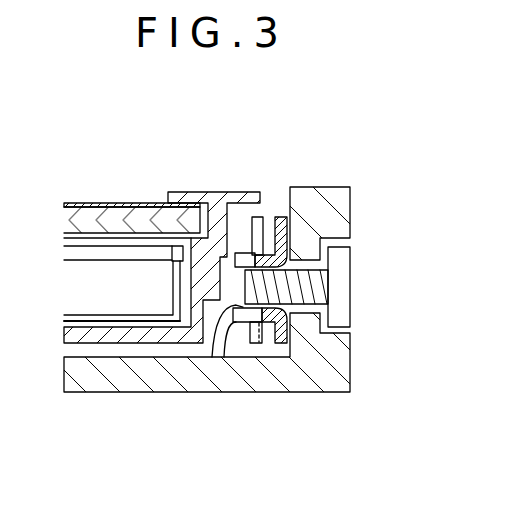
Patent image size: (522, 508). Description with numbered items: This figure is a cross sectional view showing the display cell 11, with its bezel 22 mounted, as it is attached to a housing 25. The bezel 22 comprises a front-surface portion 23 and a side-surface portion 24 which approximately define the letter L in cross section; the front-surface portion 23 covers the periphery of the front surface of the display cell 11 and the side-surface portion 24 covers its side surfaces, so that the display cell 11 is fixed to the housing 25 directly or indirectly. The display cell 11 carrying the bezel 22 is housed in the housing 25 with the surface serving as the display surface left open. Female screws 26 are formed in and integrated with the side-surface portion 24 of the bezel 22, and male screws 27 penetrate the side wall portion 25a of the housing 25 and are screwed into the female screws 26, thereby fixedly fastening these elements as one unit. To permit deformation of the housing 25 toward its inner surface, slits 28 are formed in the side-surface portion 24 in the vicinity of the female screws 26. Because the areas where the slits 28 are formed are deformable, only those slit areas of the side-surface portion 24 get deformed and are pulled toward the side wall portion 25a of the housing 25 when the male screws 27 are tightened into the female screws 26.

The display cell 11 is at (90, 203).
The bezel 22 is at (257, 205).
The front-surface portion 23 is at (213, 191).
The side-surface portion 24 is at (258, 254).
The housing 25 is at (316, 393).
The side wall portion 25a is at (310, 213).
The female screws 26 is at (212, 357).
The male screws 27 is at (342, 290).
The slits 28 is at (278, 216).